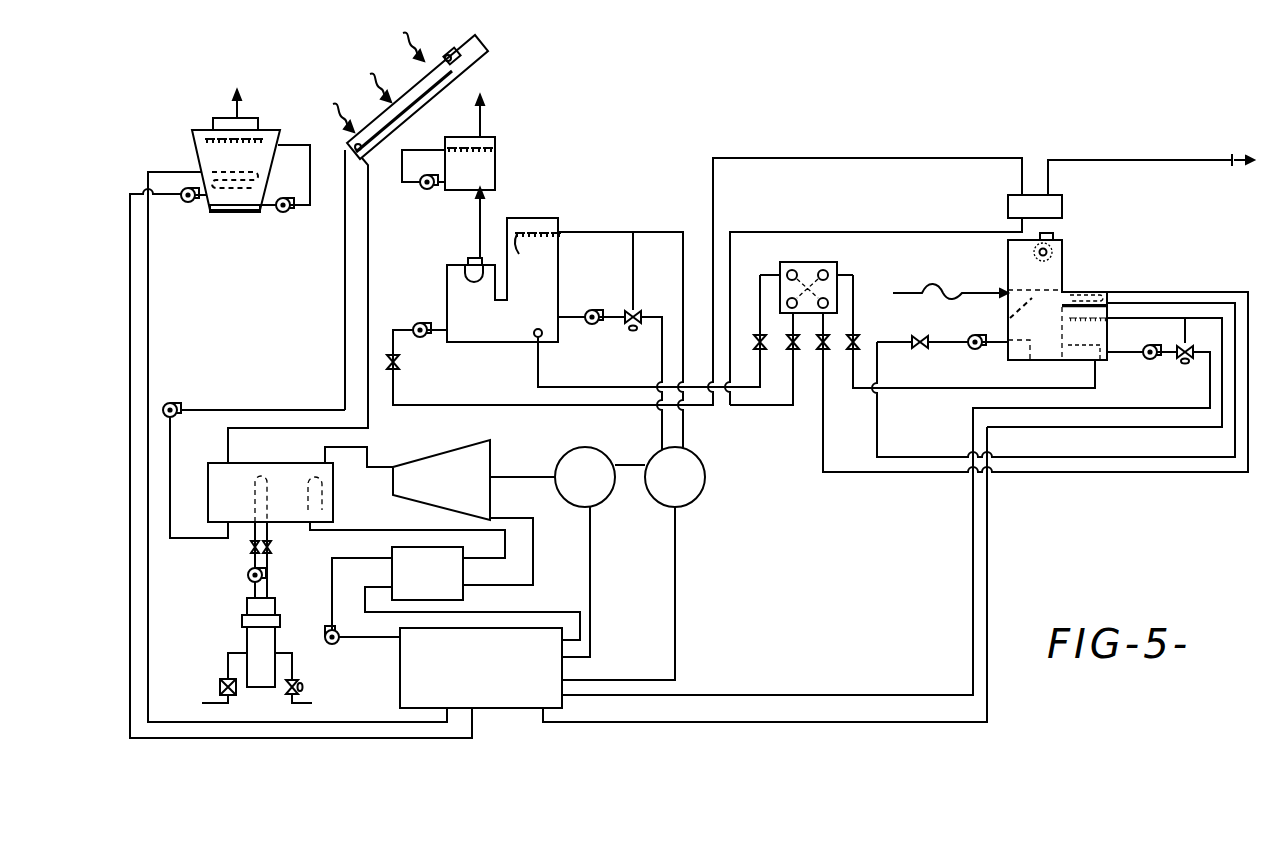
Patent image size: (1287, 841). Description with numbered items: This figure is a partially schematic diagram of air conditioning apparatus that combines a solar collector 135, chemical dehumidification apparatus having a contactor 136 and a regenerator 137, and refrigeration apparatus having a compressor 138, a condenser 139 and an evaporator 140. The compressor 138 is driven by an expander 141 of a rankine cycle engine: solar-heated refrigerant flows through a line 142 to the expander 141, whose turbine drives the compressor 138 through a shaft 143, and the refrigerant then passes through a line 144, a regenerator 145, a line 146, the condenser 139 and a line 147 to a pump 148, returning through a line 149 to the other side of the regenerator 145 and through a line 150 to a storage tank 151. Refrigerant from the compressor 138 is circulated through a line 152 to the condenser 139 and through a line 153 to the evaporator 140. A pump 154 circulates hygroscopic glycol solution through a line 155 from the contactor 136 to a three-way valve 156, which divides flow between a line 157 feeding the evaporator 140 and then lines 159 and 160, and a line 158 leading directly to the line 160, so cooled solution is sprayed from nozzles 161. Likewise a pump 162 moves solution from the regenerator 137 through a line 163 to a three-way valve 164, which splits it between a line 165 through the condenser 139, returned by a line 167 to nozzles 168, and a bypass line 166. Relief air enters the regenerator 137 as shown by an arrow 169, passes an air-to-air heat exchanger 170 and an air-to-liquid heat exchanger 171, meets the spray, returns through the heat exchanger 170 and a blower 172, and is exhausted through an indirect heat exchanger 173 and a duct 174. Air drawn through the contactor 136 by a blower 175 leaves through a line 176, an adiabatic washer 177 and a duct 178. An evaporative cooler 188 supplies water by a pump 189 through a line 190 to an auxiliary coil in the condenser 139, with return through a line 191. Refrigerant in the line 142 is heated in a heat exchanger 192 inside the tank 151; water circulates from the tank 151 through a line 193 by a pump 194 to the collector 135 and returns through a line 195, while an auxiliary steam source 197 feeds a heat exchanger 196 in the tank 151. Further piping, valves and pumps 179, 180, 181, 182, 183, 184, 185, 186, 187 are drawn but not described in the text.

The solar collector 135 is at (451, 46).
The contactor 136 is at (560, 220).
The regenerator 137 is at (1064, 258).
The compressor 138 is at (596, 450).
The condenser 139 is at (482, 710).
The evaporator 140 is at (706, 481).
The expander 141 is at (469, 446).
The line 142 is at (362, 455).
The shaft 143 is at (542, 477).
The line 144 is at (486, 587).
The regenerator 145 is at (442, 590).
The line 146 is at (580, 591).
The line 147 is at (368, 640).
The pump 148 is at (340, 636).
The line 149 is at (333, 560).
The line 150 is at (443, 530).
The storage tank 151 is at (287, 460).
The line 152 is at (592, 543).
The line 153 is at (677, 548).
The pump 154 is at (603, 309).
The line 155 is at (567, 318).
The three-way valve 156 is at (636, 313).
The line 157 is at (662, 357).
The line 158 is at (631, 266).
The line 159 is at (686, 442).
The line 160 is at (617, 230).
The nozzles 161 is at (535, 250).
The pump 162 is at (1148, 360).
The line 163 is at (1122, 357).
The three-way valve 164 is at (1193, 348).
The line 165 is at (1080, 412).
The line 166 is at (1182, 330).
The line 167 is at (990, 546).
The nozzles 168 is at (1070, 330).
The arrow 169 is at (986, 292).
The indirect air-to-air heat exchanger 170 is at (1010, 304).
The indirect air-to-liquid heat exchanger 171 is at (1096, 290).
The blower 172 is at (1055, 237).
The indirect heat exchanger 173 is at (1064, 208).
The duct 174 is at (1134, 162).
The blower 175 is at (466, 261).
The line 176 is at (470, 232).
The adiabatic washer 177 is at (466, 193).
The duct 178 is at (481, 123).
The pump 179 is at (422, 323).
The valve conduit 180 is at (398, 383).
The conduit 181 is at (826, 232).
The valve assembly 182 is at (815, 262).
The conduit 183 is at (856, 314).
The pump 184 is at (970, 350).
The conduit 185 is at (878, 373).
The conduit 186 is at (1078, 474).
The conduit 187 is at (606, 378).
The evaporative cooler 188 is at (194, 150).
The pump 189 is at (185, 209).
The line 190 is at (130, 299).
The line 191 is at (148, 333).
The liquid-to-liquid indirect heat exchanger 192 is at (308, 500).
The line 193 is at (174, 541).
The pump 194 is at (176, 403).
The line 195 is at (378, 274).
The indirect liquid-to-liquid heat exchanger 196 is at (256, 493).
The auxiliary steam source 197 is at (246, 634).